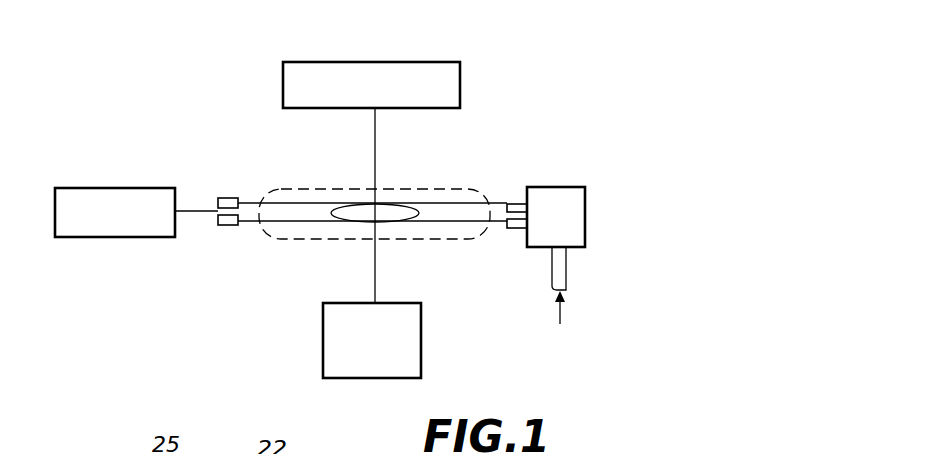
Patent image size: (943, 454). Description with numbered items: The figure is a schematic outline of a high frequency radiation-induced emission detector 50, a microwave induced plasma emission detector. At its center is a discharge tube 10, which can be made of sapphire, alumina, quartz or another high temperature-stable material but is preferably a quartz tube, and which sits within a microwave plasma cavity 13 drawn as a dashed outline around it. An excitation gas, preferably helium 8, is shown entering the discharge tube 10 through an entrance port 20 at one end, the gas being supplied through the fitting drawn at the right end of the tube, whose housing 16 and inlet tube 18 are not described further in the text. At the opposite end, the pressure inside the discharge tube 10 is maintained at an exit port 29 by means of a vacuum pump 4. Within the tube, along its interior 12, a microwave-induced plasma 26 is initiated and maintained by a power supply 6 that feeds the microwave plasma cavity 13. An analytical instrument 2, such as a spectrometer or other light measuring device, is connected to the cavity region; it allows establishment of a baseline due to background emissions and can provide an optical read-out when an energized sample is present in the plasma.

The analytical instrument 2 is at (352, 62).
The vacuum pump 4 is at (124, 188).
The power supply 6 is at (368, 378).
The helium 8 is at (563, 318).
The discharge tube 10 is at (464, 234).
The interior 12 is at (445, 207).
The microwave plasma cavity 13 is at (292, 241).
The gas inlet housing 16 is at (580, 187).
The helium inlet tube 18 is at (566, 275).
The entrance port 20 is at (521, 206).
The microwave-induced plasma 26 is at (393, 208).
The exit port 29 is at (219, 207).
The high frequency radiation-induced emission detector 50 is at (492, 100).